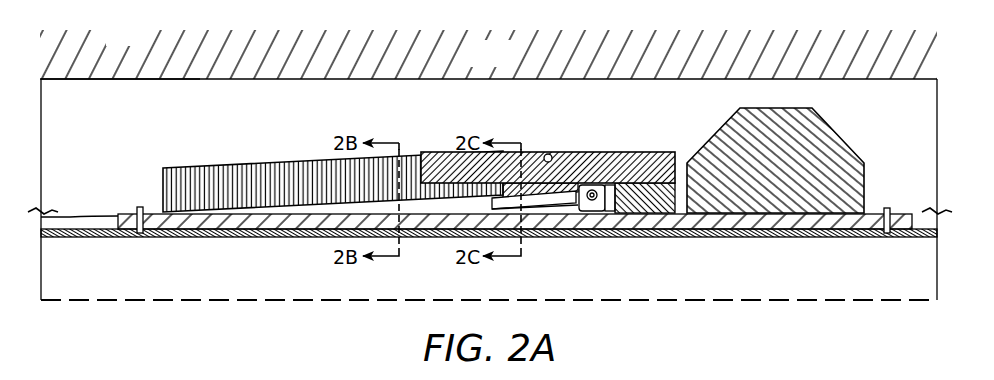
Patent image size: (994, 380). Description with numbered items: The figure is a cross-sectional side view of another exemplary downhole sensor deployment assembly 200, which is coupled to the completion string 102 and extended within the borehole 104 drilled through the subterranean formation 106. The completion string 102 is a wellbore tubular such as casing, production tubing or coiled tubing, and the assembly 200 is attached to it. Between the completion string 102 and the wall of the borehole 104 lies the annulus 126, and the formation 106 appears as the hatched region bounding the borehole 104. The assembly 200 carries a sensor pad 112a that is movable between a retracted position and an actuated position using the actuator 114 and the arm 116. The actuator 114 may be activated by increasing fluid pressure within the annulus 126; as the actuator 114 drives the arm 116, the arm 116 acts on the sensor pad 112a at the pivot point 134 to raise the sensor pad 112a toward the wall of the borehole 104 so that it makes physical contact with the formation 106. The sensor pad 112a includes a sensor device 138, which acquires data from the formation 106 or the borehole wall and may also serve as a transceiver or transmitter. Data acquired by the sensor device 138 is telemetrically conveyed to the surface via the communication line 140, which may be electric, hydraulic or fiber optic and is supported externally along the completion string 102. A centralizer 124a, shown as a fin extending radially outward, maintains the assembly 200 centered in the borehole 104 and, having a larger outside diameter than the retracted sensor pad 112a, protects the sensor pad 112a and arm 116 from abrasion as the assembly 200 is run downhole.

The downhole sensor deployment assembly 200 is at (117, 150).
The completion string 102 is at (213, 238).
The borehole 104 is at (147, 81).
The subterranean formation 106 is at (505, 65).
The sensor pad 112a is at (646, 149).
The actuator 114 is at (535, 215).
The arm 116 is at (266, 164).
The centralizer 124a is at (853, 146).
The annulus 126 is at (213, 128).
The pivot point 134 is at (548, 154).
The sensor device 138 is at (605, 162).
The communication line 140 is at (70, 216).